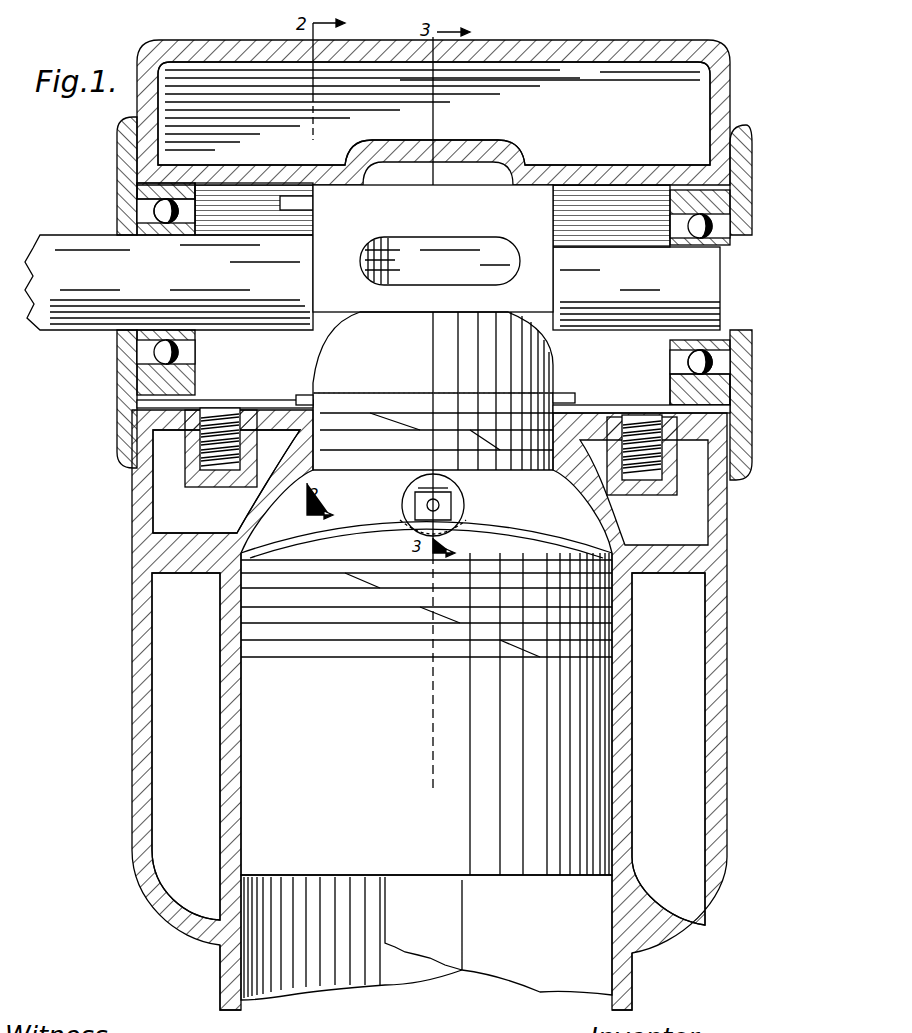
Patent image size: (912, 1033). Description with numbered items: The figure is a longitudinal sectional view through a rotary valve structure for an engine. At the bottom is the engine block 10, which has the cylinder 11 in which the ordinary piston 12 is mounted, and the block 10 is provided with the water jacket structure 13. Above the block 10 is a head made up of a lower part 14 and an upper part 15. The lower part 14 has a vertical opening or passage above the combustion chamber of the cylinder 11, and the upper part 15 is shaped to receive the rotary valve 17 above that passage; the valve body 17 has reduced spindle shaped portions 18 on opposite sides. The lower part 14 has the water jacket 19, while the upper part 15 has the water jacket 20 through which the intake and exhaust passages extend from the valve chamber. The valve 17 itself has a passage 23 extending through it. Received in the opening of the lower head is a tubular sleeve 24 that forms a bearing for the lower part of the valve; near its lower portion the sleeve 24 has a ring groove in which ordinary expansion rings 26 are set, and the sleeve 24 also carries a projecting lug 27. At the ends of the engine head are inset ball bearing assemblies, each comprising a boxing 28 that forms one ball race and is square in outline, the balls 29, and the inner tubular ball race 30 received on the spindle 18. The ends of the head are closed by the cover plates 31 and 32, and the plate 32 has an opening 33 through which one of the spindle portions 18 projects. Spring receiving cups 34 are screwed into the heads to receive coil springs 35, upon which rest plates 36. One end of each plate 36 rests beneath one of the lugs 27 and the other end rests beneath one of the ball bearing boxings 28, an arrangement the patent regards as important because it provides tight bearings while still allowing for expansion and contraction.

The engine block 10 is at (218, 958).
The cylinder 11 is at (426, 937).
The piston 12 is at (426, 698).
The water jacket structure 13 is at (428, 749).
The lower part of the head 14 is at (729, 505).
The upper part of the head 15 is at (434, 113).
The rotary valve 17 is at (433, 248).
The reduced spindle shaped portions 18 is at (720, 293).
The water jacket 19 is at (226, 481).
The water jacket 20 is at (433, 112).
The passage 23 is at (440, 261).
The tubular sleeve 24 is at (433, 391).
The expansion rings 26 is at (354, 445).
The projecting lug 27 is at (310, 385).
The boxing 28 is at (680, 380).
The balls 29 is at (686, 356).
The inner tubular ball race 30 is at (672, 228).
The cover plate 31 is at (737, 276).
The cover plate 32 is at (118, 208).
The opening 33 is at (118, 344).
The spring receiving cups 34 is at (188, 452).
The coil springs 35 is at (636, 462).
The plates 36 is at (243, 400).